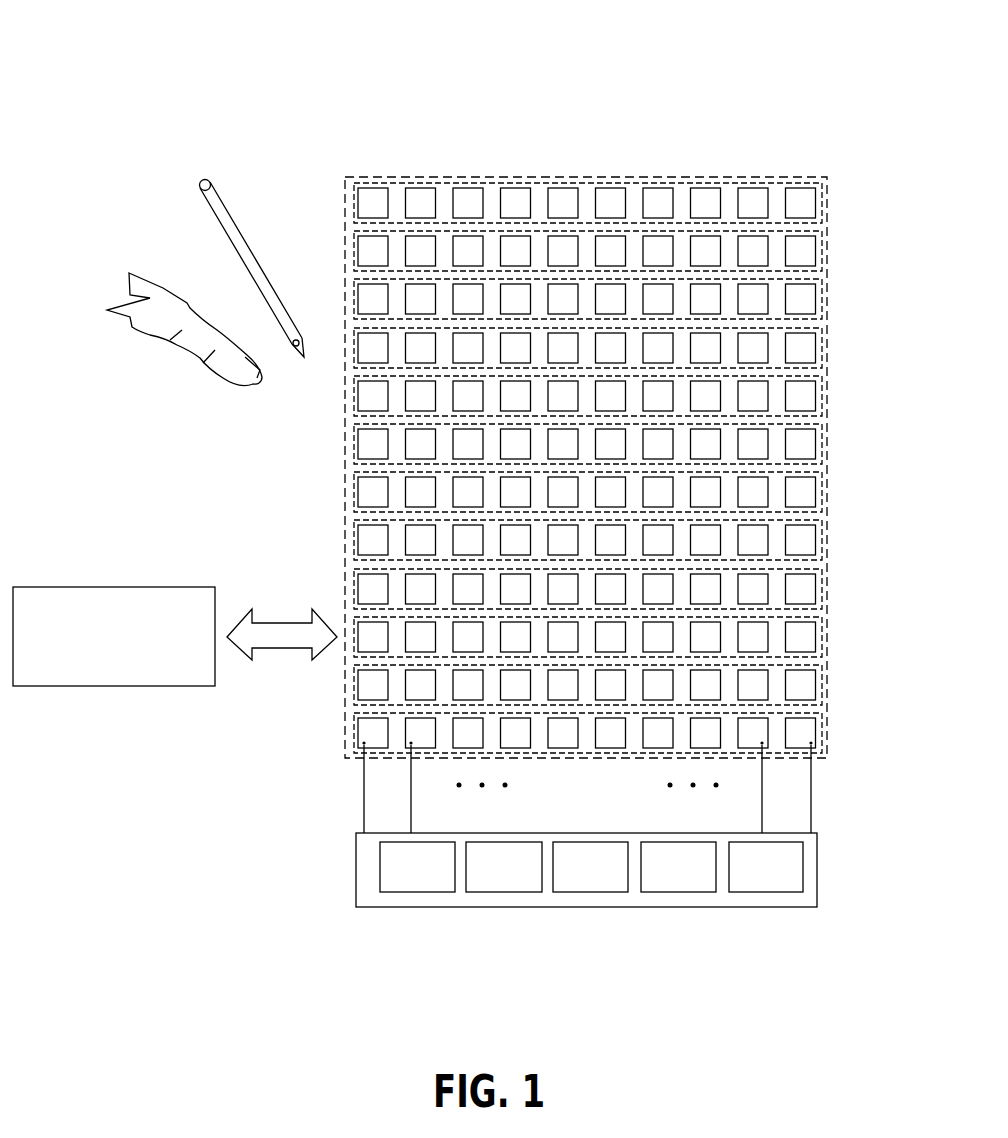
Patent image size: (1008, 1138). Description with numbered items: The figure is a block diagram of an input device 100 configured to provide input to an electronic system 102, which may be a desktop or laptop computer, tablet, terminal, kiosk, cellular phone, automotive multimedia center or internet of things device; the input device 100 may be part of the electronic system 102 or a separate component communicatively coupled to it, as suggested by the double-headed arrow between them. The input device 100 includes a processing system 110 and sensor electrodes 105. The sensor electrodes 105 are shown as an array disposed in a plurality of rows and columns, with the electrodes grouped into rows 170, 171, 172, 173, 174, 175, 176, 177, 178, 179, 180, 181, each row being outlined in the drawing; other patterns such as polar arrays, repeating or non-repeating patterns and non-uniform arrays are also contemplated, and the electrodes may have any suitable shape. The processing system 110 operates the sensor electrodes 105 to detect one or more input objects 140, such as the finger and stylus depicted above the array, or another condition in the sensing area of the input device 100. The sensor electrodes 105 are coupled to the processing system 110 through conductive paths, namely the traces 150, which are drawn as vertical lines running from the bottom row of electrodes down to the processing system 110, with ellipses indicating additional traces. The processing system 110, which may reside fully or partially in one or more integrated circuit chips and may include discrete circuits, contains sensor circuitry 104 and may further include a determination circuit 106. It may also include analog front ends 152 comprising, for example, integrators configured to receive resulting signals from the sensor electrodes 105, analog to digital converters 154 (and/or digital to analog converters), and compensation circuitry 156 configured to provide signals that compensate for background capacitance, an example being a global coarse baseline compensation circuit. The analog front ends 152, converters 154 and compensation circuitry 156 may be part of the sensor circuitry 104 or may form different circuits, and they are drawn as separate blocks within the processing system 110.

The input device 100 is at (118, 46).
The electronic system 102 is at (93, 649).
The sensor circuitry 104 is at (397, 879).
The sensor electrodes 105 is at (482, 177).
The determination circuit 106 is at (746, 879).
The processing system 110 is at (817, 865).
The input object 140 is at (233, 220).
The traces 150 is at (811, 787).
The analog front ends 152 is at (484, 879).
The analog to digital converters 154 is at (570, 879).
The compensation circuitry 156 is at (658, 879).
The row 170 is at (817, 203).
The row 171 is at (817, 251).
The row 172 is at (817, 299).
The row 173 is at (817, 348).
The row 174 is at (817, 396).
The row 175 is at (817, 444).
The row 176 is at (817, 492).
The row 177 is at (817, 540).
The row 178 is at (817, 589).
The row 179 is at (817, 637).
The row 180 is at (817, 685).
The row 181 is at (817, 733).